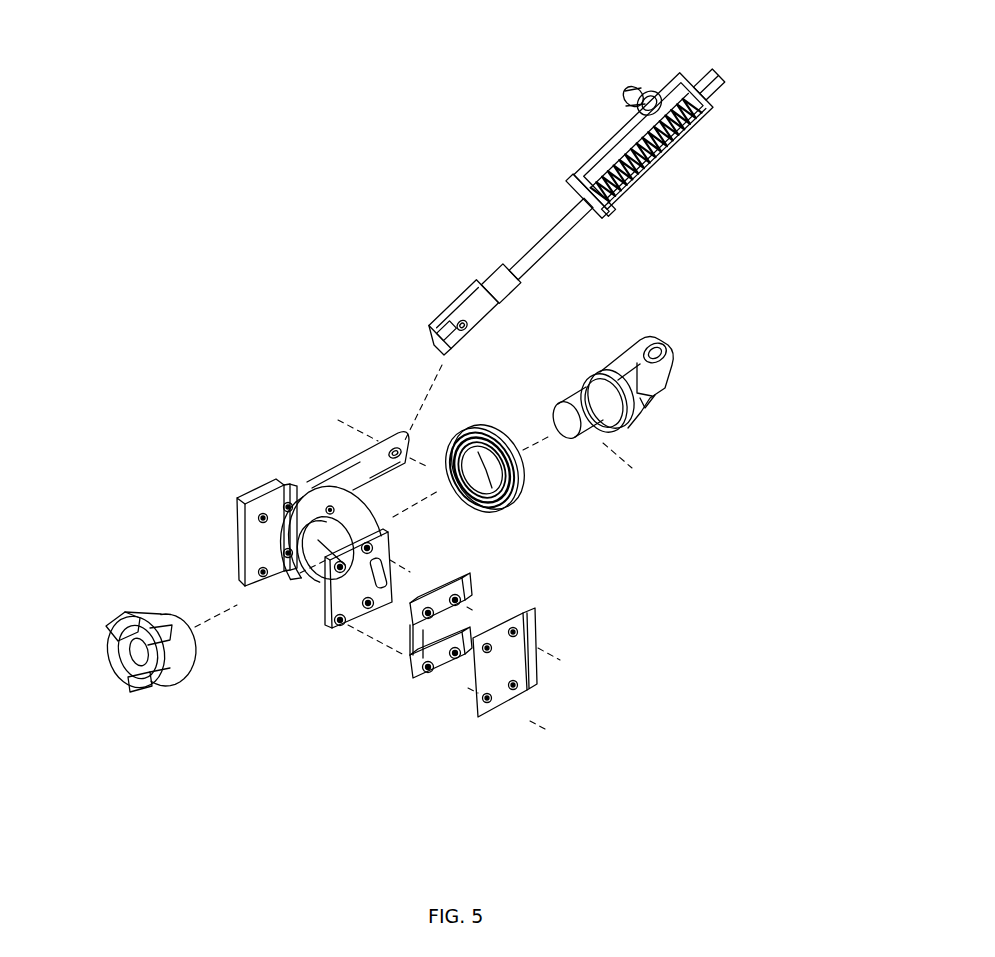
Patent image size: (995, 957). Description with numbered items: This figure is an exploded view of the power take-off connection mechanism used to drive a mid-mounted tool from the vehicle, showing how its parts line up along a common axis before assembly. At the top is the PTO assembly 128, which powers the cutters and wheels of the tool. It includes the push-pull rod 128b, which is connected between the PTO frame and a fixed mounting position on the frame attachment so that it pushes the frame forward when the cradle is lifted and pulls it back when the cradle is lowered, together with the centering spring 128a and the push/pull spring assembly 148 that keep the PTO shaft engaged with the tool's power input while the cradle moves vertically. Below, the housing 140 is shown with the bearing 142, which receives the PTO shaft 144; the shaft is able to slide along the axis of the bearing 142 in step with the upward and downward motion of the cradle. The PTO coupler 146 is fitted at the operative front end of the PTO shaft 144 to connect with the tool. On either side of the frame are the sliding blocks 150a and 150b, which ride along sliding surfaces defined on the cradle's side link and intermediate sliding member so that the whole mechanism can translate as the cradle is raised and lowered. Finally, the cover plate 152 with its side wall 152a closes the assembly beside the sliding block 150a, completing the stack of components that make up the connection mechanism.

The PTO assembly 128 is at (744, 129).
The centering spring 128a is at (677, 131).
The push-pull rod 128b is at (522, 252).
The push/pull spring assembly 148 is at (634, 87).
The PTO shaft 144 is at (668, 400).
The bearing 142 is at (530, 480).
The housing 140 is at (372, 610).
The sliding block 150a is at (432, 678).
The sliding block 150b is at (234, 565).
The PTO coupler 146 is at (112, 643).
The cover plate 152 is at (500, 702).
The cover plate side wall 152a is at (532, 668).